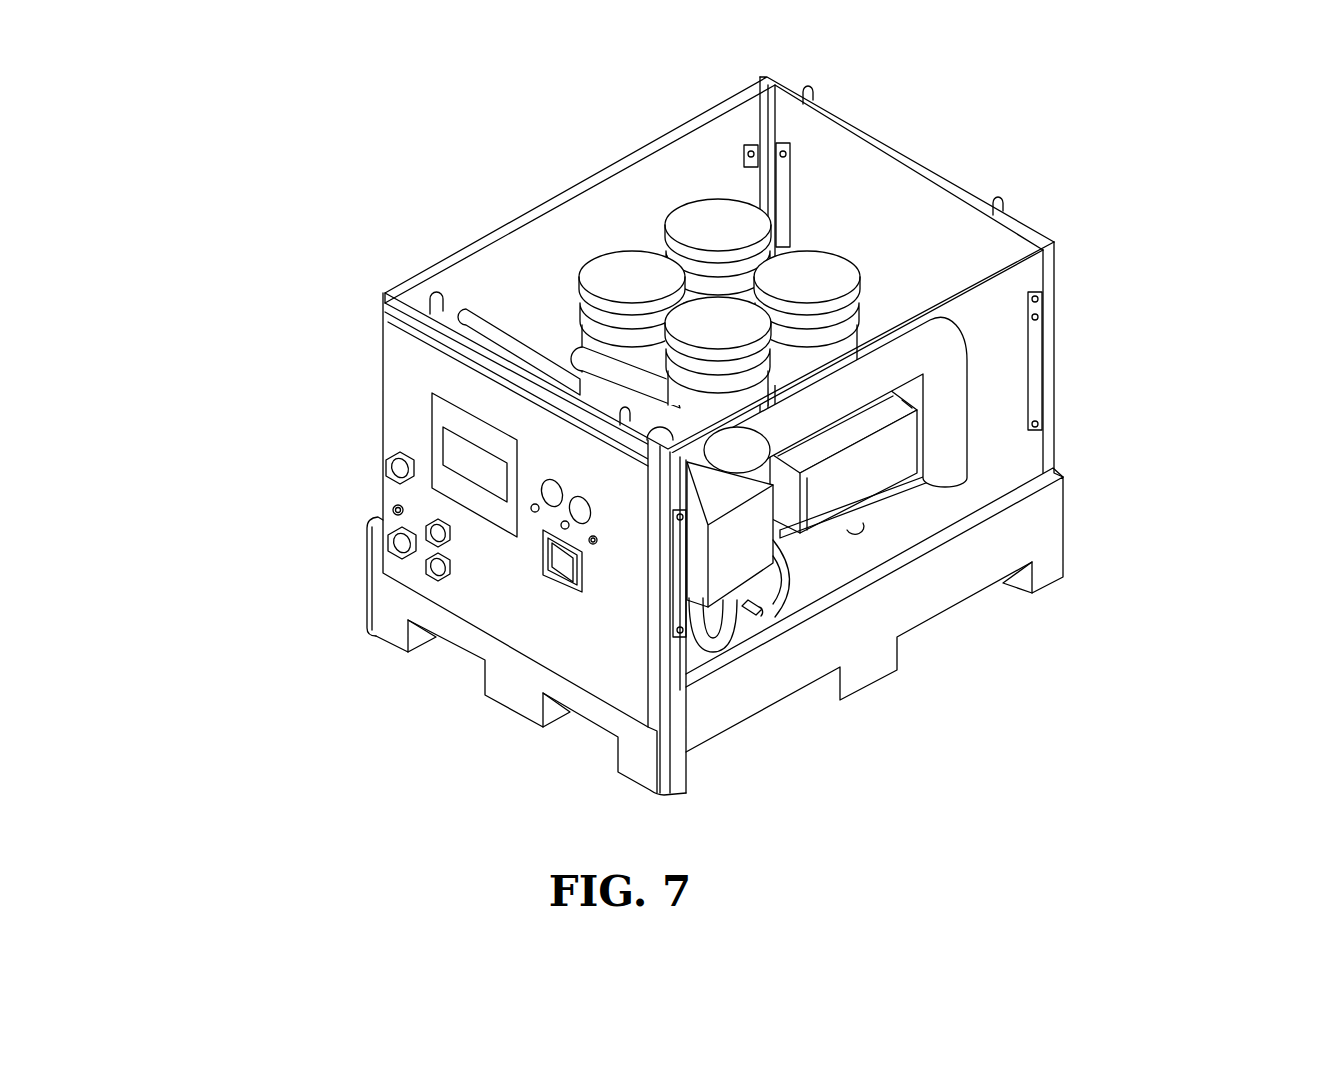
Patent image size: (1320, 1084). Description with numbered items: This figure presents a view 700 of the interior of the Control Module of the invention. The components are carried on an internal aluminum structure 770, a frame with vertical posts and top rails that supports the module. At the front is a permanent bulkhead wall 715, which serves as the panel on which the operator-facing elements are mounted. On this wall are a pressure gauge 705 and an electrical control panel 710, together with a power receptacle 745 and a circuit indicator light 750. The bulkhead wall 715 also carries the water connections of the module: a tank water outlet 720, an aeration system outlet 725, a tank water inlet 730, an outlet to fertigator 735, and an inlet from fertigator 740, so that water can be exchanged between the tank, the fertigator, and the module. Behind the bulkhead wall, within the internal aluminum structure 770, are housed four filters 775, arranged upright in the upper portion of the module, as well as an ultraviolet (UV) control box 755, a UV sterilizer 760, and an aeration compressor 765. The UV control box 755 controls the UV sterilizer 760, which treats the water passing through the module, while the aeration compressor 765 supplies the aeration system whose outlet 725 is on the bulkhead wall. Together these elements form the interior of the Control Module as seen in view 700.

The view 700 is at (692, 488).
The pressure gauge 705 is at (553, 478).
The electrical control panel 710 is at (447, 403).
The permanent bulkhead wall 715 is at (396, 392).
The tank water outlet 720 is at (384, 464).
The aeration system outlet 725 is at (389, 510).
The tank water inlet 730 is at (384, 557).
The outlet to fertigator 735 is at (438, 584).
The inlet from fertigator 740 is at (452, 556).
The power receptacle 745 is at (564, 576).
The circuit indicator light 750 is at (601, 549).
The ultraviolet (UV) control box 755 is at (744, 571).
The UV sterilizer 760 is at (837, 554).
The aeration compressor 765 is at (900, 451).
The internal aluminum structure 770 is at (1058, 281).
The filters 775 is at (826, 269).